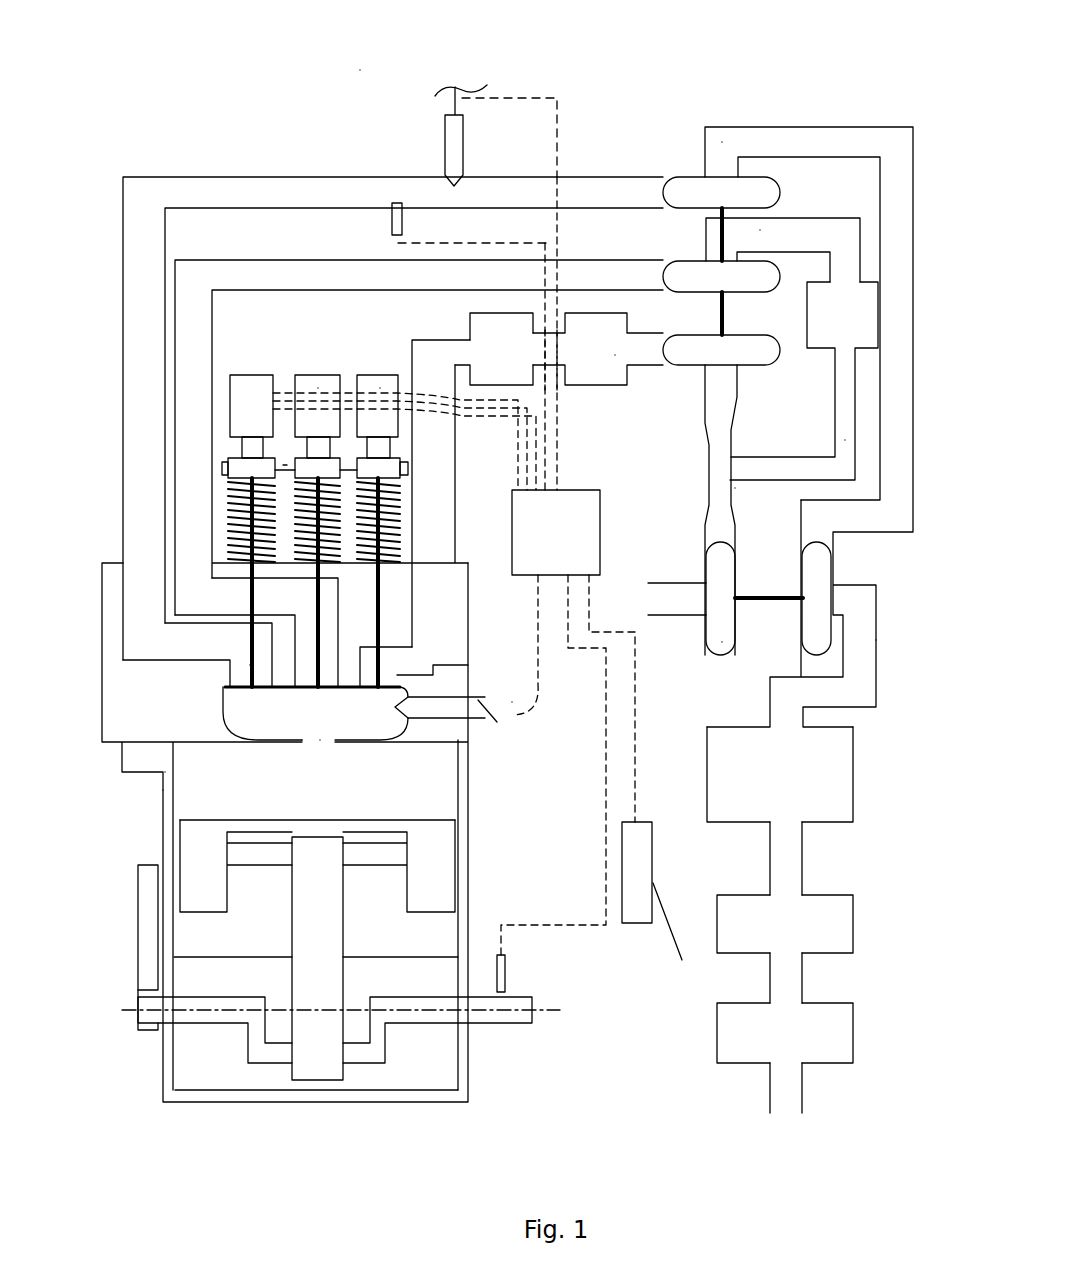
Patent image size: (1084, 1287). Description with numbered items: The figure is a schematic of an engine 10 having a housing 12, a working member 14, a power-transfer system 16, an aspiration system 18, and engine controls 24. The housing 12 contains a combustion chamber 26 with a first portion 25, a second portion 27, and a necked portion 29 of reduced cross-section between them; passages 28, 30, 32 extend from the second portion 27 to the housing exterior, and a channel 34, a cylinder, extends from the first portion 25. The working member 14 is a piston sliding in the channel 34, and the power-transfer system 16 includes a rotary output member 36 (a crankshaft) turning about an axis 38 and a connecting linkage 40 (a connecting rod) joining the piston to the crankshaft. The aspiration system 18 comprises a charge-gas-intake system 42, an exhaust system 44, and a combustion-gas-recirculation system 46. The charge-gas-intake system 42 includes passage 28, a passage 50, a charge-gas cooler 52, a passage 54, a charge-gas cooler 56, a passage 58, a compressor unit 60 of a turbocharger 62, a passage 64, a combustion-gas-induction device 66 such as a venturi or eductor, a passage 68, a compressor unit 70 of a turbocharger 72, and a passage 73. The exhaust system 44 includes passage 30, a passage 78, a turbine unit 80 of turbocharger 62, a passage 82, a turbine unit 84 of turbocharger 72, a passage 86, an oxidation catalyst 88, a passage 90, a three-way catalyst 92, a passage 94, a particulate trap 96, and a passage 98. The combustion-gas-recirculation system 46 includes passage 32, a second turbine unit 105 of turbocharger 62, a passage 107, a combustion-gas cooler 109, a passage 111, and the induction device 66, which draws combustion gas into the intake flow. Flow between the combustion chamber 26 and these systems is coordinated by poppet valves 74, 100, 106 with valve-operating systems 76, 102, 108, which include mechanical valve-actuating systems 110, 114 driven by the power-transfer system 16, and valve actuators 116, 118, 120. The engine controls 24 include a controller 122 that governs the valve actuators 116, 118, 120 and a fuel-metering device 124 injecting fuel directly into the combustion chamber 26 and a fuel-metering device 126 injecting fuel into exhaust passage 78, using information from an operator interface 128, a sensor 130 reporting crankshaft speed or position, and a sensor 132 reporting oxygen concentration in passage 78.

The engine 10 is at (358, 75).
The housing 12 is at (163, 790).
The working member 14 is at (388, 825).
The power-transfer system 16 is at (435, 1030).
The aspiration system 18 is at (590, 157).
The engine controls 24 is at (467, 468).
The first portion 25 is at (300, 790).
The combustion chamber 26 is at (327, 745).
The second portion 27 is at (300, 719).
The passage 28 is at (417, 634).
The necked portion 29 is at (317, 738).
The passage 30 is at (167, 652).
The passage 32 is at (270, 609).
The channel 34 is at (175, 792).
The rotary output member 36 is at (262, 1050).
The axis 38 is at (548, 1020).
The connecting linkage 40 is at (295, 925).
The charge-gas-intake system 42 is at (632, 380).
The exhaust system 44 is at (318, 163).
The combustion-gas-recirculation system 46 is at (195, 250).
The passage 50 is at (445, 515).
The charge-gas cooler 52 is at (485, 362).
The passage 54 is at (528, 365).
The charge-gas cooler 56 is at (582, 362).
The passage 58 is at (615, 360).
The compressor unit 60 is at (700, 355).
The turbocharger 62 is at (690, 165).
The passage 64 is at (725, 395).
The combustion-gas-induction device 66 is at (735, 488).
The passage 68 is at (715, 528).
The compressor unit 70 is at (722, 642).
The turbocharger 72 is at (845, 573).
The passage 73 is at (668, 600).
The valve 74 is at (395, 680).
The valve-operating system 76 is at (377, 345).
The passage 78 is at (155, 309).
The turbine unit 80 is at (677, 185).
The passage 82 is at (807, 152).
The turbine unit 84 is at (828, 598).
The passage 86 is at (855, 645).
The oxidation catalyst 88 is at (770, 782).
The passage 90 is at (783, 857).
The three-way catalyst 92 is at (770, 934).
The passage 94 is at (790, 976).
The particulate trap 96 is at (770, 1052).
The passage 98 is at (770, 1088).
The valve 100 is at (245, 665).
The valve-operating system 102 is at (250, 318).
The second turbine unit 105 is at (695, 272).
The valve 106 is at (313, 668).
The passage 107 is at (770, 249).
The valve-operating system 108 is at (322, 318).
The combustion-gas cooler 109 is at (823, 324).
The mechanical valve-actuating system 110 is at (405, 470).
The passage 111 is at (845, 445).
The mechanical valve-actuating system 114 is at (283, 458).
The valve actuator 116 is at (380, 388).
The valve actuator 118 is at (245, 390).
The valve actuator 120 is at (318, 388).
The controller 122 is at (542, 539).
The fuel-metering device 124 is at (512, 702).
The fuel-metering device 126 is at (444, 128).
The operator interface 128 is at (636, 923).
The sensor 130 is at (395, 205).
The sensor 132 is at (503, 965).